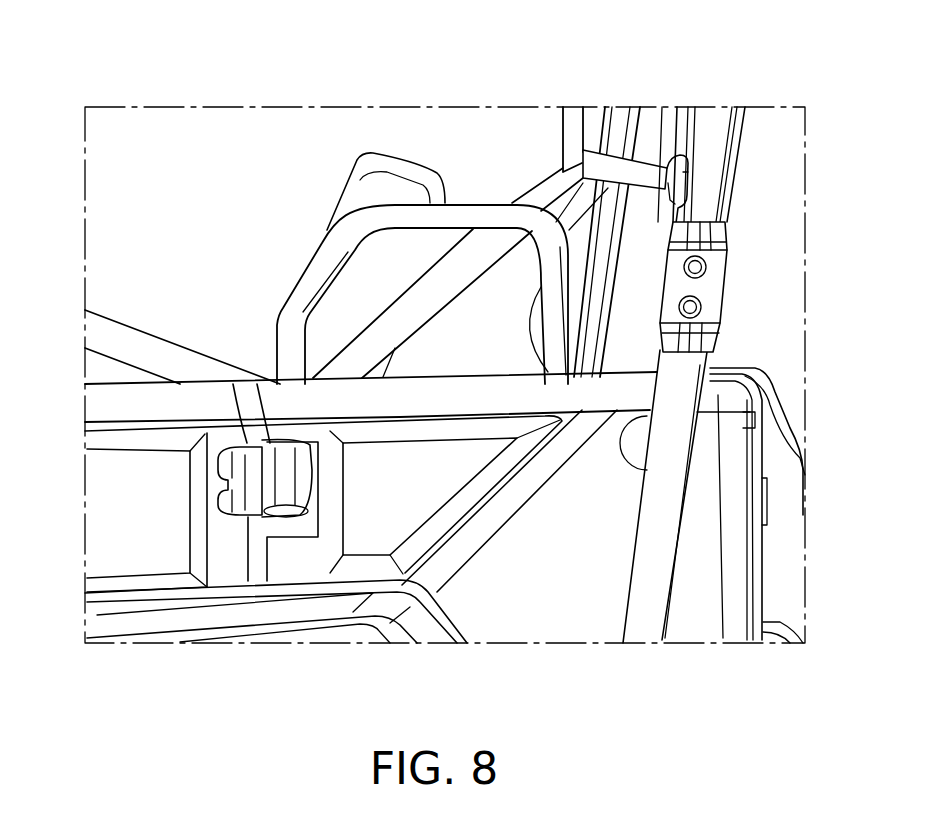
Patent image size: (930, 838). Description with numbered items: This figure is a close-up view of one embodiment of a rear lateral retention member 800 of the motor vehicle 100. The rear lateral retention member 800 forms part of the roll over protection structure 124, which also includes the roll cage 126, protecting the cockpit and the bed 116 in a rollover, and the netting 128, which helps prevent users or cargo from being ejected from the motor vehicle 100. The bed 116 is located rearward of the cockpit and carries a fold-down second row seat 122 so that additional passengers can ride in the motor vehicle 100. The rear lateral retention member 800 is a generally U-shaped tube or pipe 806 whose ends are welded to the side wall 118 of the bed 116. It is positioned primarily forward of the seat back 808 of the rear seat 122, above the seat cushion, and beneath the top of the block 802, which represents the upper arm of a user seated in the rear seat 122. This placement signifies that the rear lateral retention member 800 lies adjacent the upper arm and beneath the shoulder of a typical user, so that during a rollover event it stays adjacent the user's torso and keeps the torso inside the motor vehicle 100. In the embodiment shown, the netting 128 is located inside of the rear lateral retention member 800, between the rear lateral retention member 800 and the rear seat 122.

The motor vehicle 100 is at (648, 647).
The bed 116 is at (150, 354).
The sidewall 118 is at (118, 552).
The fold-down second row seat 122 is at (650, 117).
The roll over protection structure 124 is at (345, 92).
The roll cage 126 is at (713, 155).
The netting 128 is at (237, 225).
The rear lateral retention member 800 is at (460, 213).
The block 802 is at (382, 175).
The U-shaped tube or pipe 806 is at (553, 325).
The seat back 808 is at (618, 120).